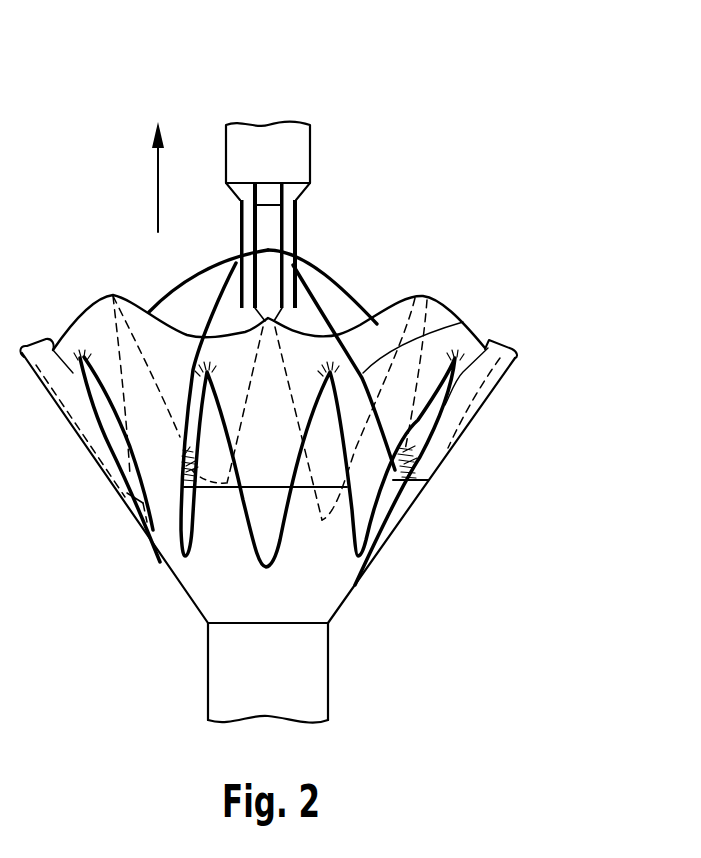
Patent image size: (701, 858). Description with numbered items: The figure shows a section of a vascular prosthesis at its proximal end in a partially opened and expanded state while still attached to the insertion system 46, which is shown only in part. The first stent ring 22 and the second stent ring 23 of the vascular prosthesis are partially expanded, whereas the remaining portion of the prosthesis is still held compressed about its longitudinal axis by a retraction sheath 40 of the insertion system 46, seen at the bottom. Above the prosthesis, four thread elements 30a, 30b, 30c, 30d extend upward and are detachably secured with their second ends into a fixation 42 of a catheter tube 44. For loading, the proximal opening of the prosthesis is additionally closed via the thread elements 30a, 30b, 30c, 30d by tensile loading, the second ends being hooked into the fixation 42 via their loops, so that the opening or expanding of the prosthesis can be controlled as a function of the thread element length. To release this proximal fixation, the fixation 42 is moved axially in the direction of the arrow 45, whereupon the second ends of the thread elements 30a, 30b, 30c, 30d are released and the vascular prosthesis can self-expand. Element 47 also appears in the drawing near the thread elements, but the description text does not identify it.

The first stent ring 22 is at (394, 500).
The second stent ring 23 is at (457, 421).
The thread element 30a is at (220, 490).
The thread element 30b is at (179, 291).
The thread element 30c is at (356, 294).
The thread element 30d is at (465, 319).
The retraction sheath 40 is at (309, 678).
The fixation 42 is at (313, 208).
The catheter tube 44 is at (311, 149).
The arrow 45 is at (157, 183).
The insertion system 46 is at (306, 175).
The outer tether 47 is at (299, 238).